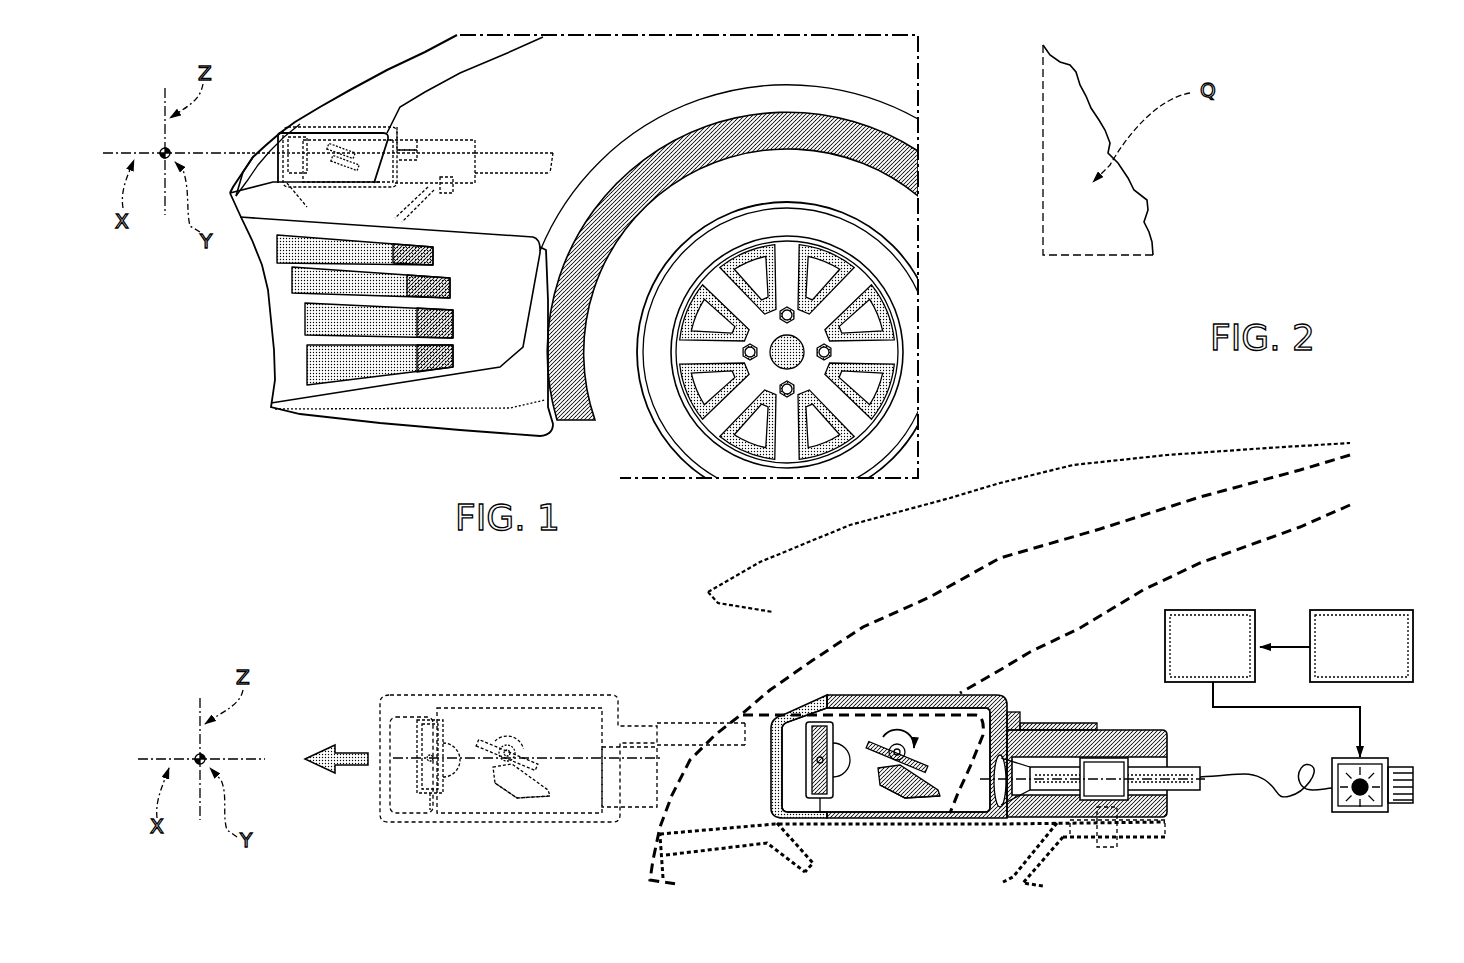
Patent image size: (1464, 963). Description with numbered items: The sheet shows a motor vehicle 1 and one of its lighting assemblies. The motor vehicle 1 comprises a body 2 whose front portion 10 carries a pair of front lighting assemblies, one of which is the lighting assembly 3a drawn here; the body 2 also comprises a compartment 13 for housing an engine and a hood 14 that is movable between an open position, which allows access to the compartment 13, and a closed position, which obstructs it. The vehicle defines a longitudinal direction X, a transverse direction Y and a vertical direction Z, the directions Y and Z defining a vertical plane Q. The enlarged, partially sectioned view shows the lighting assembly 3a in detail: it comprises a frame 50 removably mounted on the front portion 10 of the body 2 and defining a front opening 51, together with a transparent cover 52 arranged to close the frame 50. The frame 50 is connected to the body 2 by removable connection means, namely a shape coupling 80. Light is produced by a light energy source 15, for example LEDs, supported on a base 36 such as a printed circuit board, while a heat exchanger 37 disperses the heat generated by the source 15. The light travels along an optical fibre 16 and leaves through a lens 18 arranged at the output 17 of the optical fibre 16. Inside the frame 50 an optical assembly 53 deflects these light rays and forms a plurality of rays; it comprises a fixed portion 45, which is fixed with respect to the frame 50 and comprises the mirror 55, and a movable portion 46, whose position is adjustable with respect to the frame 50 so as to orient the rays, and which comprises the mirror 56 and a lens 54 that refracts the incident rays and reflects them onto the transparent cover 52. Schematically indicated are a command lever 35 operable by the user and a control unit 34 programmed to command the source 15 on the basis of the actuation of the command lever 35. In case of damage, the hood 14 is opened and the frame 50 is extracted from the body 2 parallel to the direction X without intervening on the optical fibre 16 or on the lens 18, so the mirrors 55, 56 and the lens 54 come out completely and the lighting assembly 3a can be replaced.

In FIG. 1, the motor vehicle 1 is at (243, 326).
In FIG. 1, the body 2 is at (462, 133).
In FIG. 2, the body 2 is at (1117, 720).
In FIG. 1, the lighting assembly 3a is at (288, 105).
In FIG. 2, the lighting assembly 3a is at (872, 835).
In FIG. 1, the front portion 10 is at (550, 80).
In FIG. 1, the compartment 13 is at (390, 104).
In FIG. 2, the compartment 13 is at (978, 497).
In FIG. 1, the hood 14 is at (407, 82).
In FIG. 2, the hood 14 is at (1072, 465).
In FIG. 2, the light energy source 15 is at (1338, 807).
In FIG. 2, the optical fibre 16 is at (1190, 785).
In FIG. 2, the output of the optical fibre 17 is at (1015, 787).
In FIG. 2, the lens 18 is at (988, 768).
In FIG. 2, the control unit 34 is at (1363, 640).
In FIG. 2, the command lever 35 is at (1187, 650).
In FIG. 2, the base 36 is at (1370, 812).
In FIG. 2, the heat exchanger 37 is at (1393, 803).
In FIG. 2, the fixed portion 45 is at (897, 800).
In FIG. 1, the movable portion 46 is at (358, 181).
In FIG. 2, the movable portion 46 is at (870, 763).
In FIG. 2, the frame 50 is at (907, 687).
In FIG. 2, the front opening 51 is at (817, 777).
In FIG. 1, the transparent cover 52 is at (257, 154).
In FIG. 2, the transparent cover 52 is at (777, 747).
In FIG. 1, the optical assembly 53 is at (347, 145).
In FIG. 2, the optical assembly 53 is at (913, 730).
In FIG. 1, the lens 54 is at (317, 168).
In FIG. 2, the lens 54 is at (820, 740).
In FIG. 2, the mirror 55 is at (930, 797).
In FIG. 2, the mirror 56 is at (867, 742).
In FIG. 1, the shape coupling 80 is at (404, 146).
In FIG. 2, the shape coupling 80 is at (1023, 737).